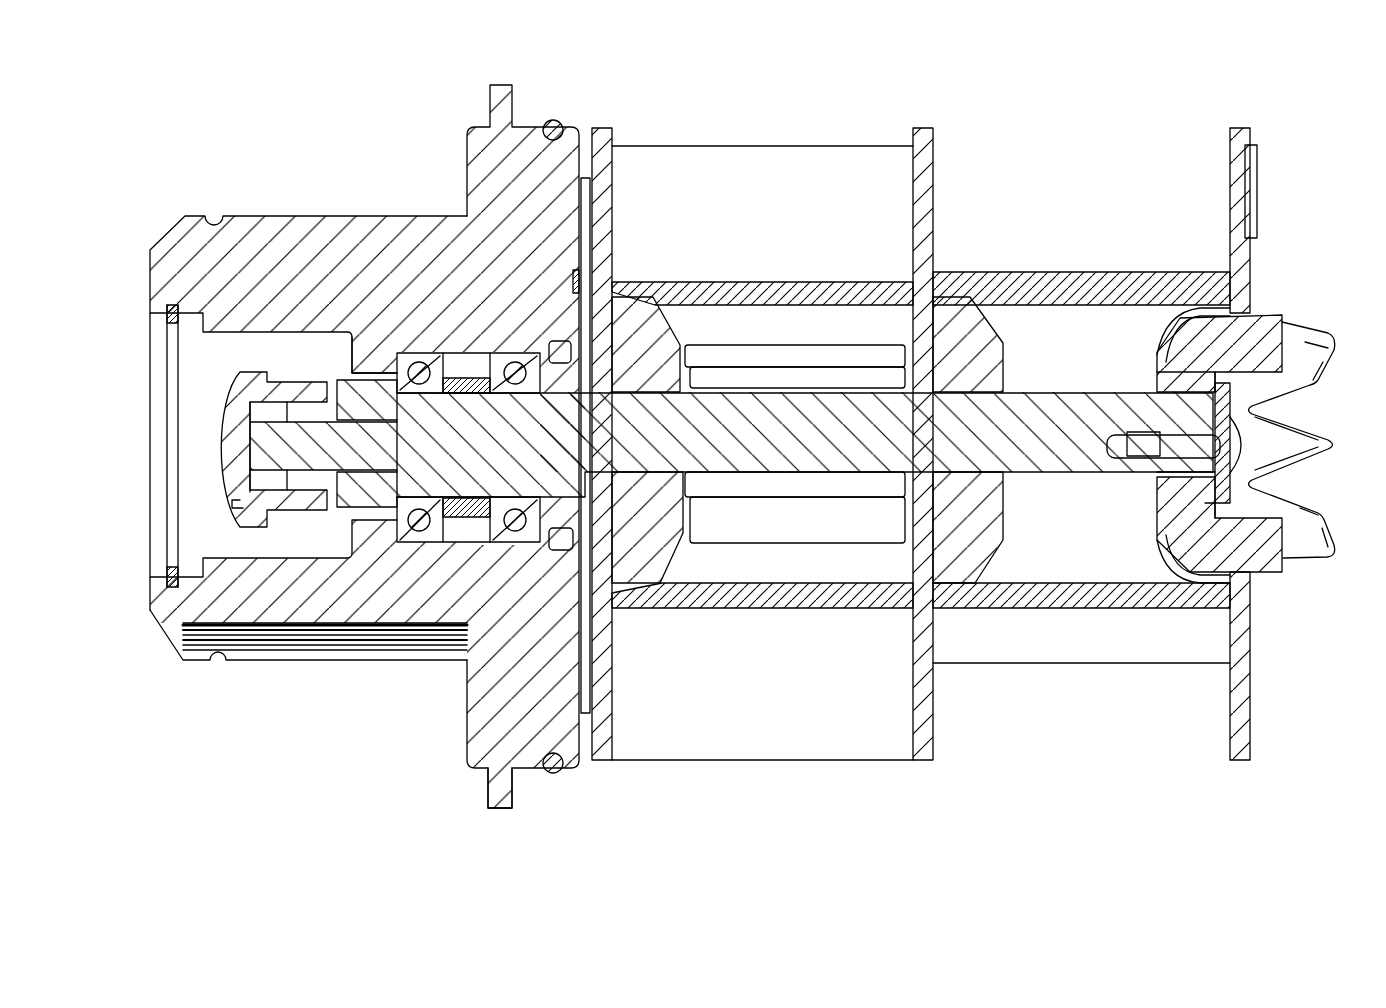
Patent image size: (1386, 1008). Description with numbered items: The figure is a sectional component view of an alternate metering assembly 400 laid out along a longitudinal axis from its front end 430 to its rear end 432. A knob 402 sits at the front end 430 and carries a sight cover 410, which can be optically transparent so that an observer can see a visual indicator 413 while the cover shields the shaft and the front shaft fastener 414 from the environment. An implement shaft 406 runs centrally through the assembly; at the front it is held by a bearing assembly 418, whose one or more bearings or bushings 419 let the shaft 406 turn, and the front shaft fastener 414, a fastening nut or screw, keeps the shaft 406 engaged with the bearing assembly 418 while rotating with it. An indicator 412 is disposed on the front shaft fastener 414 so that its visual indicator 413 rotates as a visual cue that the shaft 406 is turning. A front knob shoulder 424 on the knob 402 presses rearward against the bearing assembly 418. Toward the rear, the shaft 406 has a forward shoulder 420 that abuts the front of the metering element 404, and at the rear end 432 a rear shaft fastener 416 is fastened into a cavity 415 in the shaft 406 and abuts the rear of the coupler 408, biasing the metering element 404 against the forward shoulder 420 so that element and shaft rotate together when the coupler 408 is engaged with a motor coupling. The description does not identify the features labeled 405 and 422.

The metering assembly 400 is at (205, 118).
The knob 402 is at (527, 128).
The metering element 404 is at (925, 148).
The rotor 405 is at (1052, 195).
The implement shaft 406 is at (1035, 408).
The coupler 408 is at (1308, 585).
The sight cover 410 is at (175, 590).
The indicator 412 is at (210, 402).
The visual indicator 413 is at (225, 515).
The front shaft fastener 414 is at (328, 480).
The cavity 415 is at (1123, 450).
The rear shaft fastener 416 is at (1220, 445).
The bearing assembly 418 is at (425, 340).
The bearings and/or bushings 419 is at (378, 503).
The forward shoulder 420 is at (598, 350).
The mounting tab 422 is at (498, 796).
The front knob shoulder 424 is at (367, 352).
The front end 430 is at (158, 222).
The rear end 432 is at (1290, 262).